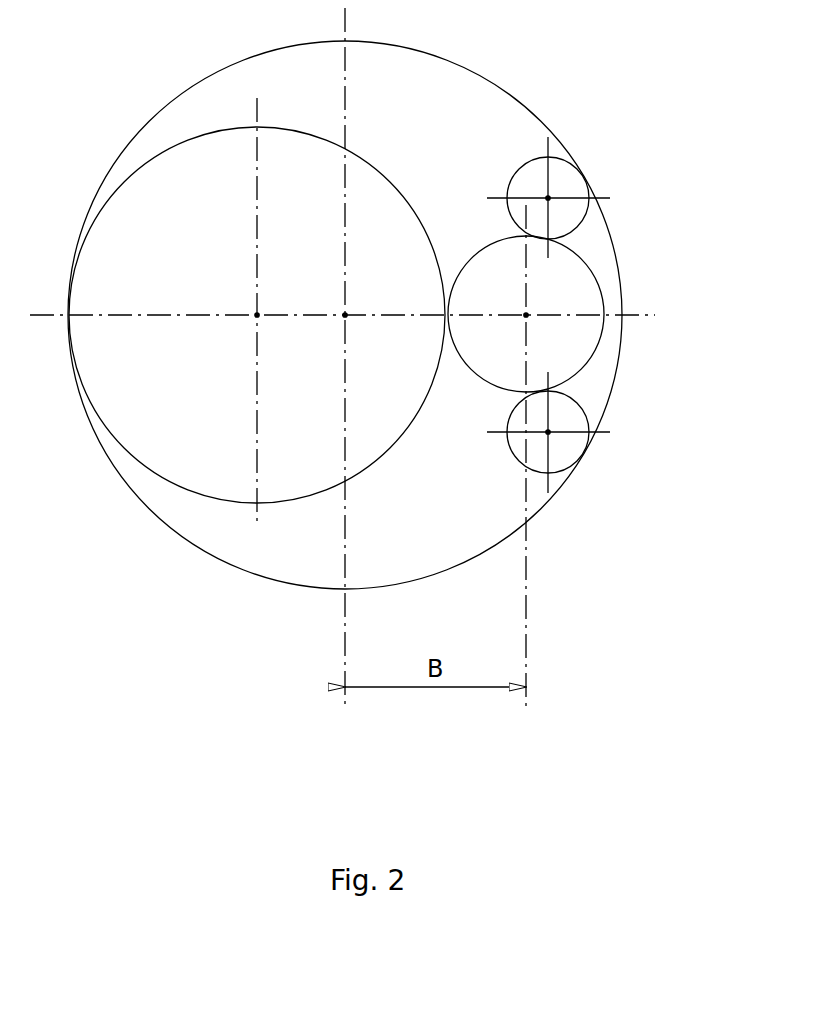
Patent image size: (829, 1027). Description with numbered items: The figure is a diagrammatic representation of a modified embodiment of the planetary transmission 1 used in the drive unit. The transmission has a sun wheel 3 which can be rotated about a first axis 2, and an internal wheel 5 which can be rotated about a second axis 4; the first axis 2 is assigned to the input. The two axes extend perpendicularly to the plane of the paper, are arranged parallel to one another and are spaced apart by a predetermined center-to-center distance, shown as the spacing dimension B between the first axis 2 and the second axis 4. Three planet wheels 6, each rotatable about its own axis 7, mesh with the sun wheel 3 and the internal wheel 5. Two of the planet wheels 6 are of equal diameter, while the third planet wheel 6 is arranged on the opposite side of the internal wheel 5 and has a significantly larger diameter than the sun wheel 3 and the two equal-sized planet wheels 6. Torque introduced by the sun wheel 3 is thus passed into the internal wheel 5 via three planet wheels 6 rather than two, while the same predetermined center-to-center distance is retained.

The planetary transmission 1 is at (657, 102).
The first axis 2 is at (528, 314).
The sun wheel 3 is at (602, 280).
The second axis 4 is at (345, 316).
The internal wheel 5 is at (102, 457).
The planet wheel 6 is at (173, 143).
The axis of planet wheel 7 is at (257, 316).